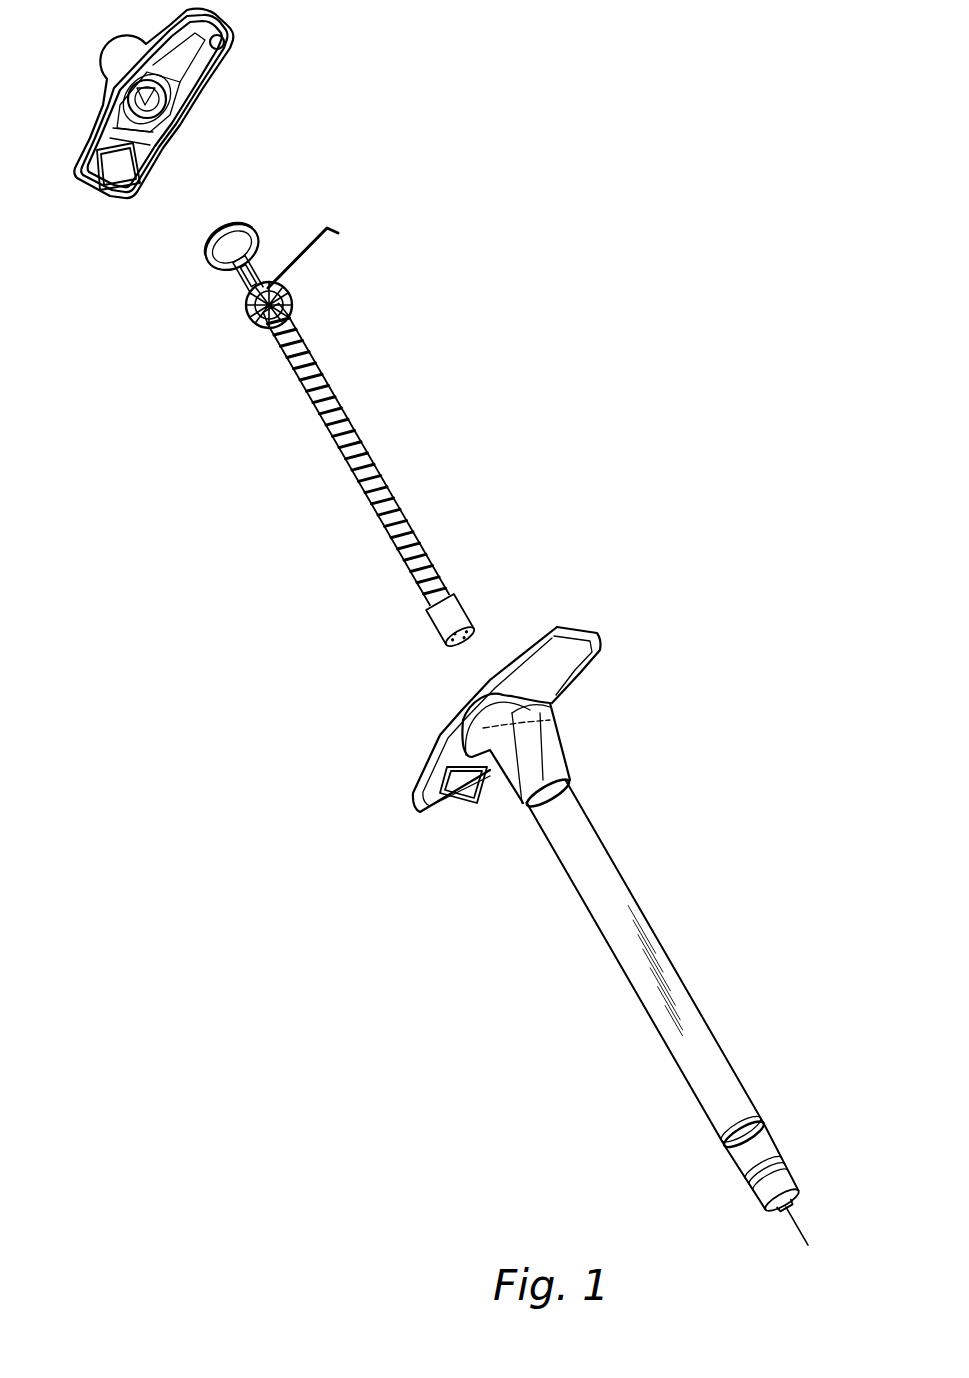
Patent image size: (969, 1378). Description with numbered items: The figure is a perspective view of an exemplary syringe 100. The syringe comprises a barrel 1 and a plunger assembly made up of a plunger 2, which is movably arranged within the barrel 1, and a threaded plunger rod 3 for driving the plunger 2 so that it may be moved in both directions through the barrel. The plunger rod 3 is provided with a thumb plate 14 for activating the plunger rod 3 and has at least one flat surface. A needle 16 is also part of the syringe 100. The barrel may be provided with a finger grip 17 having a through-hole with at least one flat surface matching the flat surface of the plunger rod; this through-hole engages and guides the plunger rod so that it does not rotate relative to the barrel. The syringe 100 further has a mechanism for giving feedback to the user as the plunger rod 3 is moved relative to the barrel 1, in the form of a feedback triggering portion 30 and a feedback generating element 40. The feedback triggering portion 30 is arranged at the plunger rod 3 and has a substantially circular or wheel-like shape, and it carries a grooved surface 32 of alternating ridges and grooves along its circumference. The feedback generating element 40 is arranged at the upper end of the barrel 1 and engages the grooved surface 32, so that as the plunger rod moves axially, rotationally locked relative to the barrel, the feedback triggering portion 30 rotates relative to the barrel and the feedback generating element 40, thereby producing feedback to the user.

The syringe 100 is at (488, 1027).
The barrel 1 is at (697, 1010).
The plunger 2 is at (453, 618).
The threaded plunger rod 3 is at (363, 453).
The thumb plate 14 is at (230, 219).
The needle 16 is at (792, 1213).
The finger grip 17 is at (233, 43).
The feedback triggering portion 30 is at (254, 314).
The grooved surface 32 is at (292, 303).
The feedback generating element 40 is at (300, 260).